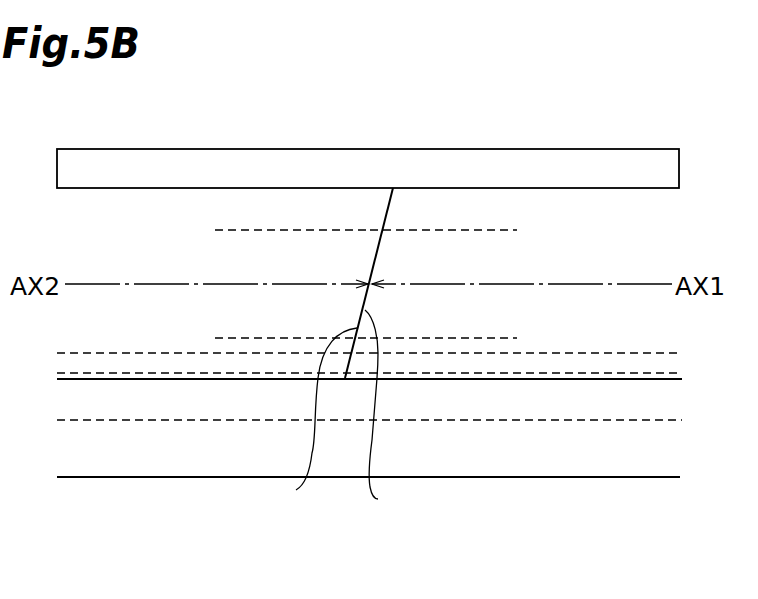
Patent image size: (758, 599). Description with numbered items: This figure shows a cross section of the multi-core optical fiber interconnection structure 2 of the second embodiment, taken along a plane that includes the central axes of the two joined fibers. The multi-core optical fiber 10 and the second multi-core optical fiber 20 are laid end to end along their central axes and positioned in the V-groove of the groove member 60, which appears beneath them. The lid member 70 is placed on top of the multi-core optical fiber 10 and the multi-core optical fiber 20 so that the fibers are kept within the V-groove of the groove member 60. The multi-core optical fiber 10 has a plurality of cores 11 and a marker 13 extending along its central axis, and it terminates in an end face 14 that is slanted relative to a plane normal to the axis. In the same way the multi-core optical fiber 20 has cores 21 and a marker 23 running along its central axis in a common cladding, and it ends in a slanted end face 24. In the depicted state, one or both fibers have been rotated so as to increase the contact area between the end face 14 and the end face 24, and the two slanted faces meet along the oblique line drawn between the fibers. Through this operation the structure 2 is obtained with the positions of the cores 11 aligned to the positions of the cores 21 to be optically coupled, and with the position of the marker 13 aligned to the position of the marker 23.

The multi-core optical fiber interconnection structure 2 is at (404, 116).
The lid member 70 is at (143, 164).
The second multi-core optical fiber 20 is at (245, 208).
The cores 21 is at (312, 228).
The marker 23 is at (177, 365).
The end face 24 is at (311, 423).
The multi-core optical fiber 10 is at (548, 208).
The cores 11 is at (448, 230).
The marker 13 is at (503, 363).
The end face 14 is at (385, 413).
The groove member 60 is at (106, 465).